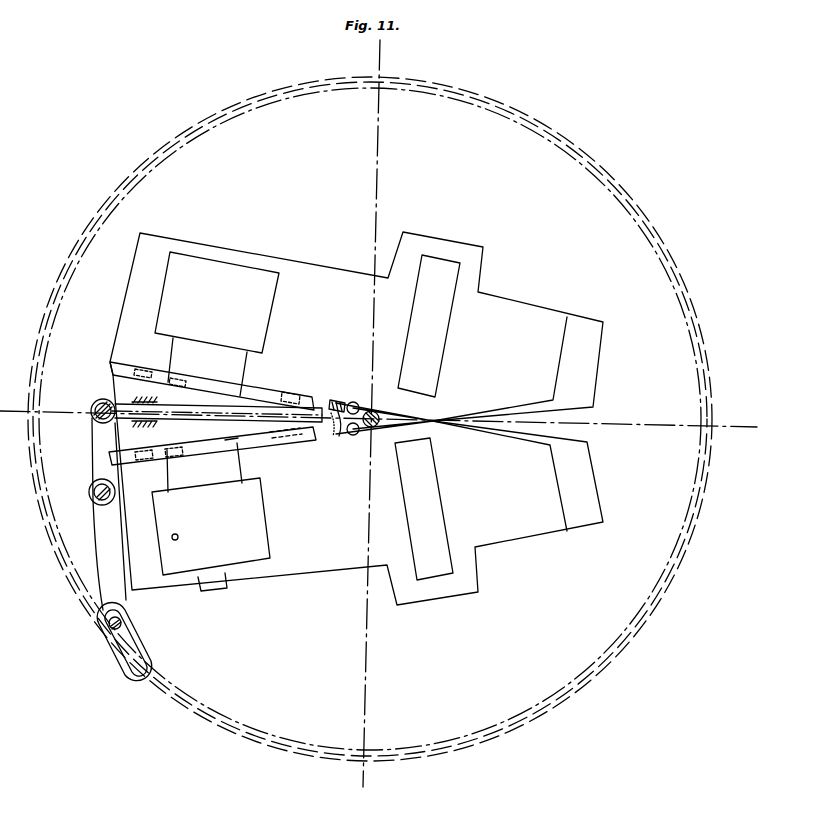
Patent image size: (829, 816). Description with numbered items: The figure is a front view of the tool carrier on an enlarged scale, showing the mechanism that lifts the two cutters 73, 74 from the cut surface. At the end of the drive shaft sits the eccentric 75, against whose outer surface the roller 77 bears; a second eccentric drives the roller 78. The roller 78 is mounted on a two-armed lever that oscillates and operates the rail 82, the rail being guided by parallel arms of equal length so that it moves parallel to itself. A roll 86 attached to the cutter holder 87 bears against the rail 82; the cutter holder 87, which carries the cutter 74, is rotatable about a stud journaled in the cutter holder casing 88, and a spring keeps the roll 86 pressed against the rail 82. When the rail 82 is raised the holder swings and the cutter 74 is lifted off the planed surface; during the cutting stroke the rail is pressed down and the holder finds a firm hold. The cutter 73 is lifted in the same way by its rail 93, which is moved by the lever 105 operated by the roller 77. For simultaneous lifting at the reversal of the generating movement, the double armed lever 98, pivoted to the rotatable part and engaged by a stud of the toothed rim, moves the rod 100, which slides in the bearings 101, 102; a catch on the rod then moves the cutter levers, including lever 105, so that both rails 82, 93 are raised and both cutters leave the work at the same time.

The cutter 73 is at (237, 387).
The cutter 74 is at (226, 441).
The eccentric 75 is at (378, 410).
The roller 77 is at (358, 404).
The roller 78 is at (350, 436).
The rail 82 is at (108, 458).
The roll 86 is at (188, 441).
The cutter holder 87 is at (176, 478).
The cutter holder casing 88 is at (165, 530).
The rail 93 is at (111, 364).
The double armed lever 98 is at (98, 519).
The rod 100 is at (188, 413).
The bearing 101 is at (124, 406).
The bearing 102 is at (270, 430).
The lever 105 is at (326, 404).